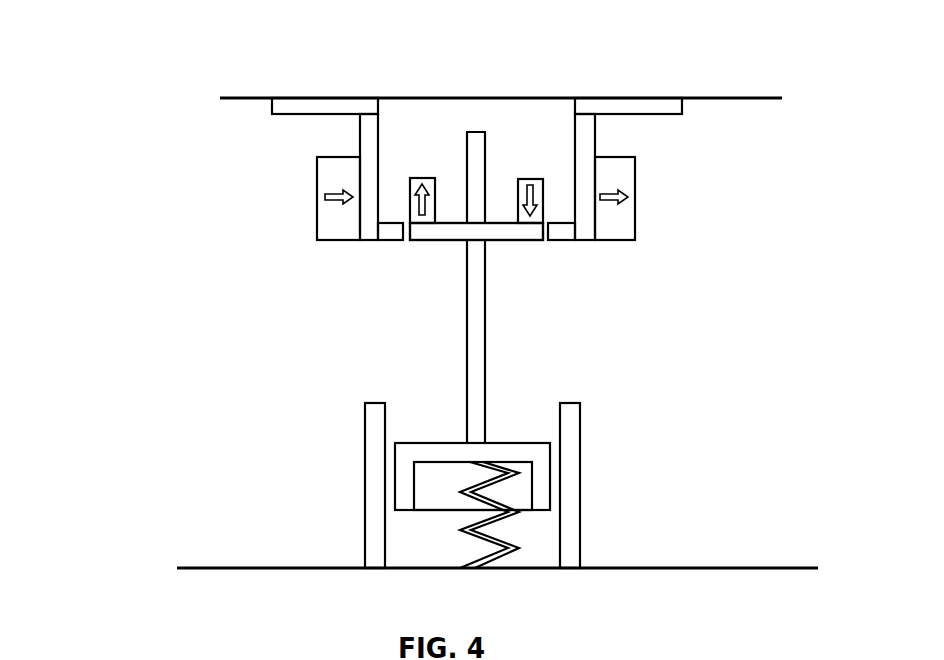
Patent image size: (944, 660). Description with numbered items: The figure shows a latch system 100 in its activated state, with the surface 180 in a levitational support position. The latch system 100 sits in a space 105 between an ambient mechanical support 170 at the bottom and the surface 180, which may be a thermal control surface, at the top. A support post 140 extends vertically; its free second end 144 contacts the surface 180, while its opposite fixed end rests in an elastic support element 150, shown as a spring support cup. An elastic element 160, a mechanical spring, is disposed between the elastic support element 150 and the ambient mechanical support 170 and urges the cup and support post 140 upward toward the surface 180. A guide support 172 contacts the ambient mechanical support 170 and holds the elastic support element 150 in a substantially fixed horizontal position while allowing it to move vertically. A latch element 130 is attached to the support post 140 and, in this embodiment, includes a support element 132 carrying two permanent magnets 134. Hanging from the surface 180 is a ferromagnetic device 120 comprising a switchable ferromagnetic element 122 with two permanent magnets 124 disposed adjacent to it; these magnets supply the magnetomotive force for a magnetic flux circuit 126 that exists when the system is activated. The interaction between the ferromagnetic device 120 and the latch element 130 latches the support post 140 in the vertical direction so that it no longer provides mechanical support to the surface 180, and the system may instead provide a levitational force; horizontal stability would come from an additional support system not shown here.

The latch system 100 is at (143, 38).
The space 105 is at (799, 347).
The ferromagnetic device 120 is at (800, 170).
The switchable ferromagnetic element 122 is at (596, 128).
The permanent magnet 124 is at (637, 197).
The magnetic flux circuit 126 is at (598, 280).
The latch element 130 is at (420, 240).
The support element 132 is at (458, 240).
The permanent magnet 134 is at (420, 178).
The support post 140 is at (487, 362).
The second end 144 is at (487, 133).
The elastic support element 150 is at (503, 443).
The elastic element 160 is at (462, 532).
The ambient mechanical support 170 is at (728, 568).
The guide support 172 is at (580, 493).
The surface 180 is at (420, 98).